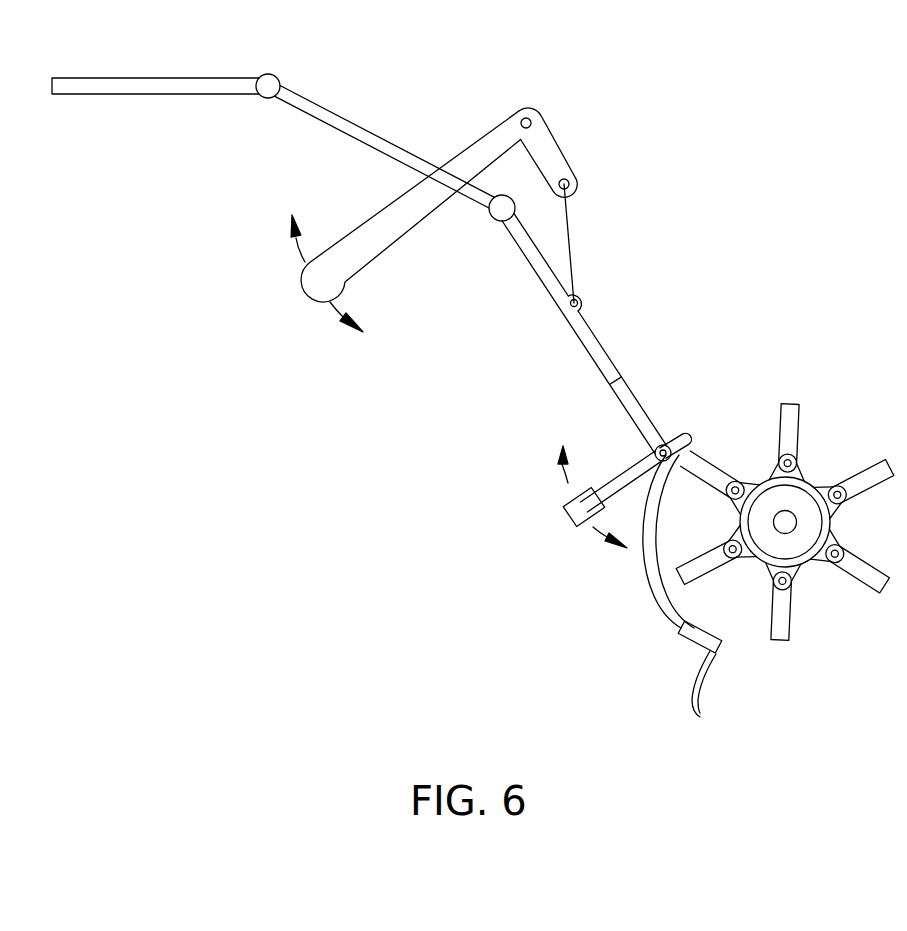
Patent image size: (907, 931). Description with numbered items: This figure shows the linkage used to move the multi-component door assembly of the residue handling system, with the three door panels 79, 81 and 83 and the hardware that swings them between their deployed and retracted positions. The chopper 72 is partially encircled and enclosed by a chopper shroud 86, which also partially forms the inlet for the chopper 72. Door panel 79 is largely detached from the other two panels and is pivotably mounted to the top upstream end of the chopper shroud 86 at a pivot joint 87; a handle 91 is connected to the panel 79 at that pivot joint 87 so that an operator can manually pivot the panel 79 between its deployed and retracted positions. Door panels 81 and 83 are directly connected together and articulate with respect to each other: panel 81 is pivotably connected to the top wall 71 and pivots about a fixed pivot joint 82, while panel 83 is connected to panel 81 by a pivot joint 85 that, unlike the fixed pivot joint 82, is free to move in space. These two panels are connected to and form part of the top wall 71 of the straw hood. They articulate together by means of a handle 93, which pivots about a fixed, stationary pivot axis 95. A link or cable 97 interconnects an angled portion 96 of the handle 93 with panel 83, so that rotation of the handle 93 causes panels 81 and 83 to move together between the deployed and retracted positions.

The top wall 71 is at (157, 85).
The chopper 72 is at (833, 454).
The door panel 79 is at (637, 408).
The door panel 81 is at (350, 123).
The pivot joint 82 is at (268, 82).
The door panel 83 is at (553, 287).
The pivot joint 85 is at (500, 213).
The chopper shroud 86 is at (645, 575).
The pivot joint 87 is at (667, 446).
The handle 91 is at (563, 501).
The handle 93 is at (330, 279).
The pivot axis 95 is at (528, 118).
The angled portion 96 is at (556, 150).
The link or cable 97 is at (570, 246).